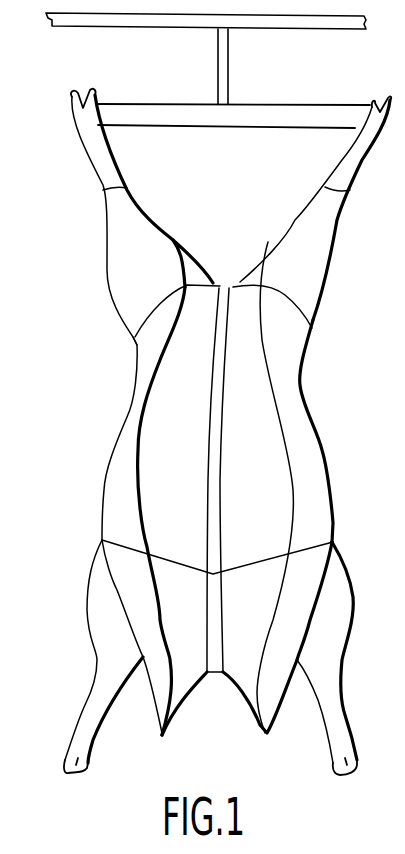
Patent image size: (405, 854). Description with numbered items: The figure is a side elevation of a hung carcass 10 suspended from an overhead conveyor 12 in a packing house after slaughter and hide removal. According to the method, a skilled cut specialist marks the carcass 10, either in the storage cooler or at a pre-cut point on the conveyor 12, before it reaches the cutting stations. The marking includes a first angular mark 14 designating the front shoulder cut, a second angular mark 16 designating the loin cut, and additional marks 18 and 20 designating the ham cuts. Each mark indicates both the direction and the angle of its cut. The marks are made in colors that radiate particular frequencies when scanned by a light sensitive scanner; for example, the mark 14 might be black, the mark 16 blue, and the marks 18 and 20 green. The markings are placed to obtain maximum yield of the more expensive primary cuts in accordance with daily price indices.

The hung carcass 10 is at (219, 432).
The overhead conveyor 12 is at (264, 22).
The first angular mark 14 is at (310, 542).
The second angular mark 16 is at (297, 305).
The ham cut mark 18 is at (350, 190).
The ham cut mark 20 is at (127, 190).